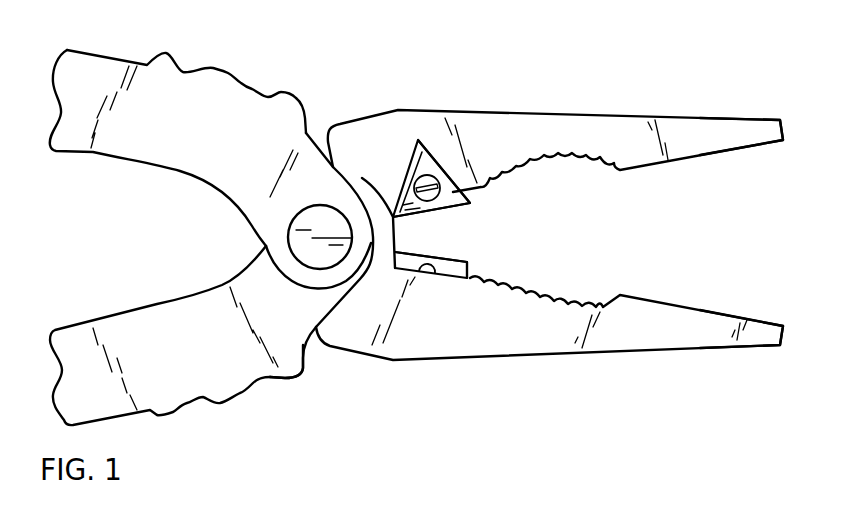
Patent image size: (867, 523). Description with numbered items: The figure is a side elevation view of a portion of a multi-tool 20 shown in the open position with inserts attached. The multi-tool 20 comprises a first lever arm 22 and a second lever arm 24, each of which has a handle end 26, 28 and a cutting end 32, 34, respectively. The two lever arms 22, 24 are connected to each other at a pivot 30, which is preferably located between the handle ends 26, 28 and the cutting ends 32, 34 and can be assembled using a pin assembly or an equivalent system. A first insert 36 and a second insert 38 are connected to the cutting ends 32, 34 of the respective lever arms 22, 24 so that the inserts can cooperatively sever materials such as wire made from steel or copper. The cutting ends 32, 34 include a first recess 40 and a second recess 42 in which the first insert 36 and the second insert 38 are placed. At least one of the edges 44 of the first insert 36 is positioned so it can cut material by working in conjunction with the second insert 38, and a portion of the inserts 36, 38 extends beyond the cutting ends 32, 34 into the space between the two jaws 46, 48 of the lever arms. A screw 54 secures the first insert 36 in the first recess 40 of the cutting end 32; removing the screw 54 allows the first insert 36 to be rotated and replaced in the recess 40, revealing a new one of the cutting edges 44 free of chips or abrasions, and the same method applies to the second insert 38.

The multi-tool 20 is at (322, 365).
The first lever arm 22 is at (308, 110).
The second lever arm 24 is at (293, 378).
The handle end 26 is at (108, 58).
The handle end 28 is at (119, 418).
The pivot 30 is at (288, 250).
The cutting end 32 is at (383, 113).
The cutting end 34 is at (409, 362).
The first insert 36 is at (432, 160).
The second insert 38 is at (458, 277).
The first recess 40 is at (455, 172).
The second recess 42 is at (470, 272).
The cutting edges 44 is at (395, 202).
The jaw 46 is at (725, 137).
The jaw 48 is at (673, 339).
The screw 54 is at (420, 172).